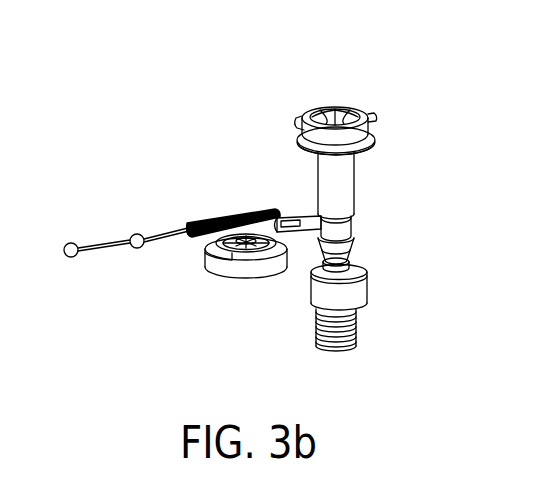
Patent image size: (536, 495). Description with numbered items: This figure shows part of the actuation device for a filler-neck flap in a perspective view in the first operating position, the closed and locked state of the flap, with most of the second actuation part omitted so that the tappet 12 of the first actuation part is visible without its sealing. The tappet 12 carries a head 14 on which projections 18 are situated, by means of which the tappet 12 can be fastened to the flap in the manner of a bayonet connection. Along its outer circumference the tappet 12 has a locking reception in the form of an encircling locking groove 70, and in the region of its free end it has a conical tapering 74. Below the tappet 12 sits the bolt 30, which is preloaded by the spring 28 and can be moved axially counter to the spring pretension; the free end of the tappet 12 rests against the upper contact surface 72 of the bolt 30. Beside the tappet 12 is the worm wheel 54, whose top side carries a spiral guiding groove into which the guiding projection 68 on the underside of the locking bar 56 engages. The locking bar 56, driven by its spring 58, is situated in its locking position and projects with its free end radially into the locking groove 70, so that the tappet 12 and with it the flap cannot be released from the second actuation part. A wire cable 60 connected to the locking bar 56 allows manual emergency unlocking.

The tappet 12 is at (348, 174).
The head 14 is at (338, 110).
The projections 18 is at (376, 112).
The spring 28 is at (316, 332).
The bolt 30 is at (367, 294).
The worm wheel 54 is at (217, 267).
The locking bar 56 is at (300, 214).
The spring 58 is at (205, 218).
The wire cable 60 is at (101, 243).
The guiding projection 68 is at (271, 258).
The locking groove 70 is at (348, 222).
The upper contact surface 72 is at (358, 264).
The conical tapering 74 is at (346, 253).